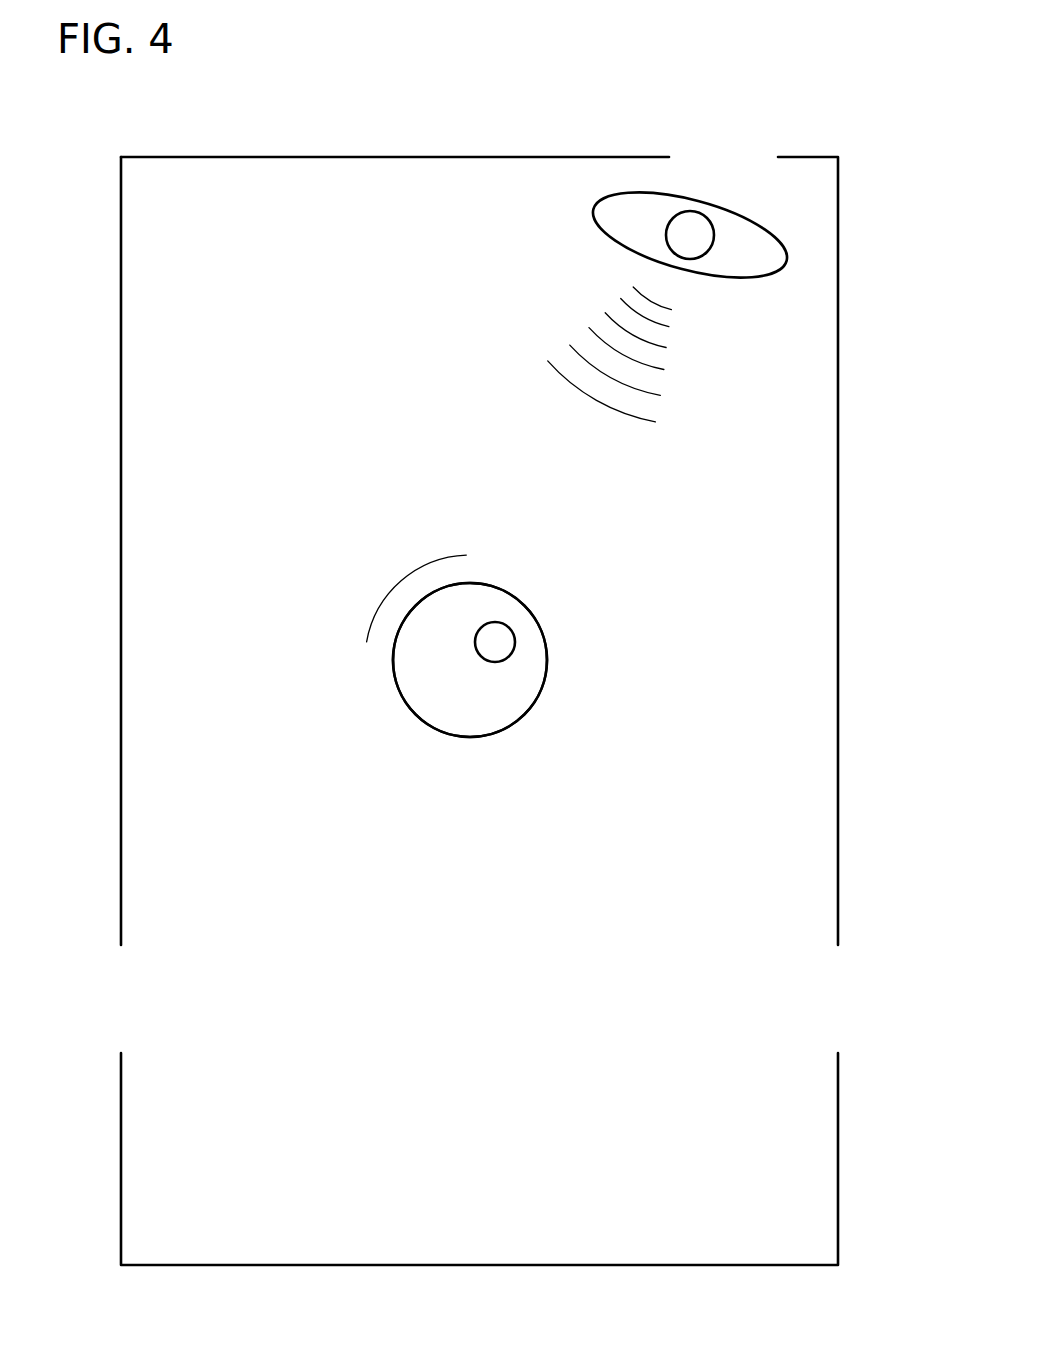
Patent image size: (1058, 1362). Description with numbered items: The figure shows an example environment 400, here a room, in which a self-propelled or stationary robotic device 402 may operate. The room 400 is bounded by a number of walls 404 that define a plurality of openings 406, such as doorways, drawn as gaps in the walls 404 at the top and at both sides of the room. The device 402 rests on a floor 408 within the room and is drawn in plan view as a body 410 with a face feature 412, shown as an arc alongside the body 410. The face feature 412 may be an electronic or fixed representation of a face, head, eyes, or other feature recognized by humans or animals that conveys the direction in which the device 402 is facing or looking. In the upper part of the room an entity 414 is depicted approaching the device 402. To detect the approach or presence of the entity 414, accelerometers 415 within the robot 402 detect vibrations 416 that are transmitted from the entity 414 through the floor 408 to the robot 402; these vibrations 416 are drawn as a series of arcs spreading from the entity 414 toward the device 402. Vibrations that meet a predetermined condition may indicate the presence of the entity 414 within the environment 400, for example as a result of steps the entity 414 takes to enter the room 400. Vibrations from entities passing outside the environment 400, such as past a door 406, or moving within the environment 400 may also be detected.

The environment 400 is at (488, 96).
The robotic device 402 is at (612, 587).
The walls 404 is at (270, 156).
The openings 406 is at (732, 136).
The floor 408 is at (503, 1104).
The body 410 is at (455, 708).
The face feature 412 is at (398, 590).
The entity 414 is at (737, 265).
The accelerometers 415 is at (510, 657).
The vibrations 416 is at (620, 418).